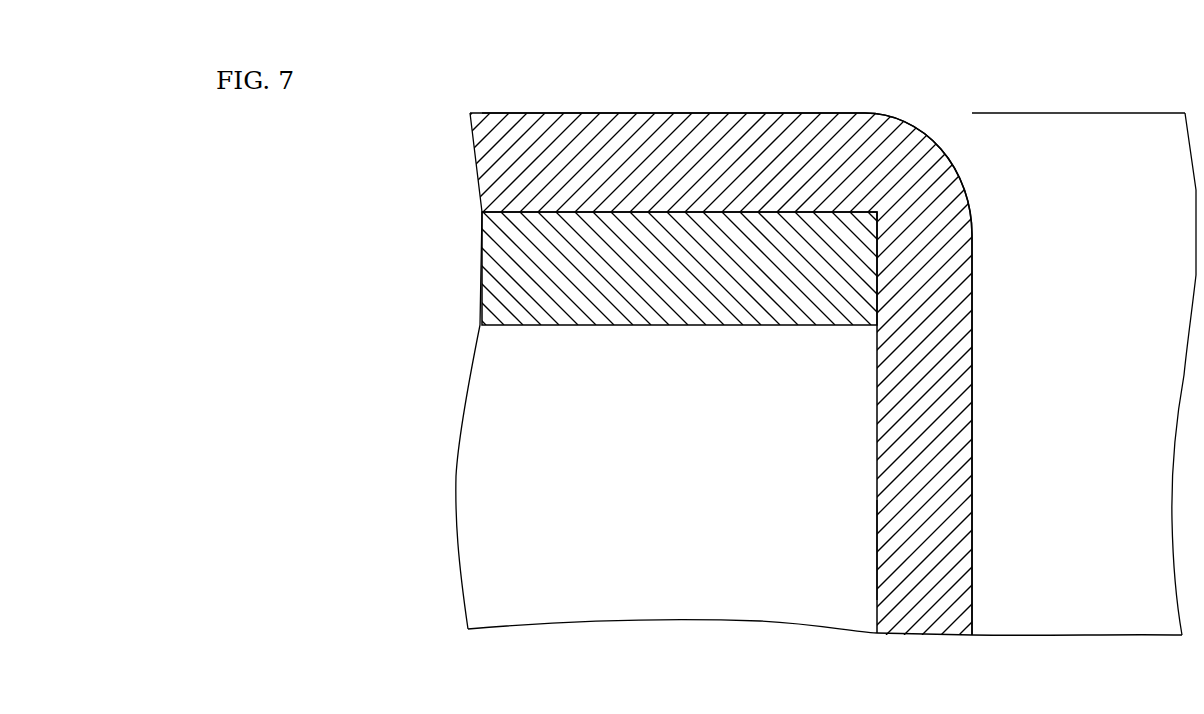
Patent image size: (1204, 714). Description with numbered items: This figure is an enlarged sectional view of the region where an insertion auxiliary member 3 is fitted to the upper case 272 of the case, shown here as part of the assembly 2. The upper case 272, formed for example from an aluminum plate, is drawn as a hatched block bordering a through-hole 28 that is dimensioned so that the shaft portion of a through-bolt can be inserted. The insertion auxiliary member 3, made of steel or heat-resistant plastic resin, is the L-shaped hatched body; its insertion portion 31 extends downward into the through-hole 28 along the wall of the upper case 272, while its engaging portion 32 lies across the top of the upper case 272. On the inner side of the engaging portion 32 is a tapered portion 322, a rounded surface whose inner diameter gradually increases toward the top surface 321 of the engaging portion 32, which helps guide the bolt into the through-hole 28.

The exhaust gas treatment body / casing 2 is at (470, 78).
The insertion auxiliary member 3 is at (1095, 113).
The through-hole 28 is at (880, 528).
The insertion portion 31 is at (967, 495).
The engaging portion 32 is at (690, 165).
The upper case 272 is at (508, 283).
The top surface of the engaging portion 321 is at (552, 112).
The tapered portion 322 is at (942, 148).